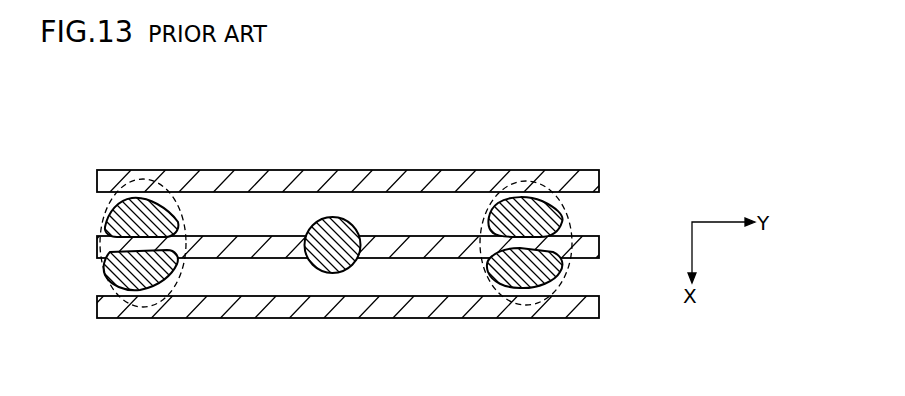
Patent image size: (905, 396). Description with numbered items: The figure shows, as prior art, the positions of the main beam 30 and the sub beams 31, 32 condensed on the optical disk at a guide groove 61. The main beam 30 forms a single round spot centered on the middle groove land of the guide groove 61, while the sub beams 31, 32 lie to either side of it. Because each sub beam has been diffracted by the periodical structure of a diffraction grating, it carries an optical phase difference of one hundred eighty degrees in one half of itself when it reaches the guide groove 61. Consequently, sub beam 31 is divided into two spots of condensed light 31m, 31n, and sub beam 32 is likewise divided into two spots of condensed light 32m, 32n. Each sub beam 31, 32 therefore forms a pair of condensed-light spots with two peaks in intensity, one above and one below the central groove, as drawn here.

The guide groove 61 is at (108, 105).
The main beam 30 is at (318, 232).
The sub beam 31 is at (572, 220).
The spot of condensed light 31m is at (537, 207).
The spot of condensed light 31n is at (555, 277).
The sub beam 32 is at (144, 179).
The spot of condensed light 32m is at (135, 225).
The spot of condensed light 32n is at (137, 275).